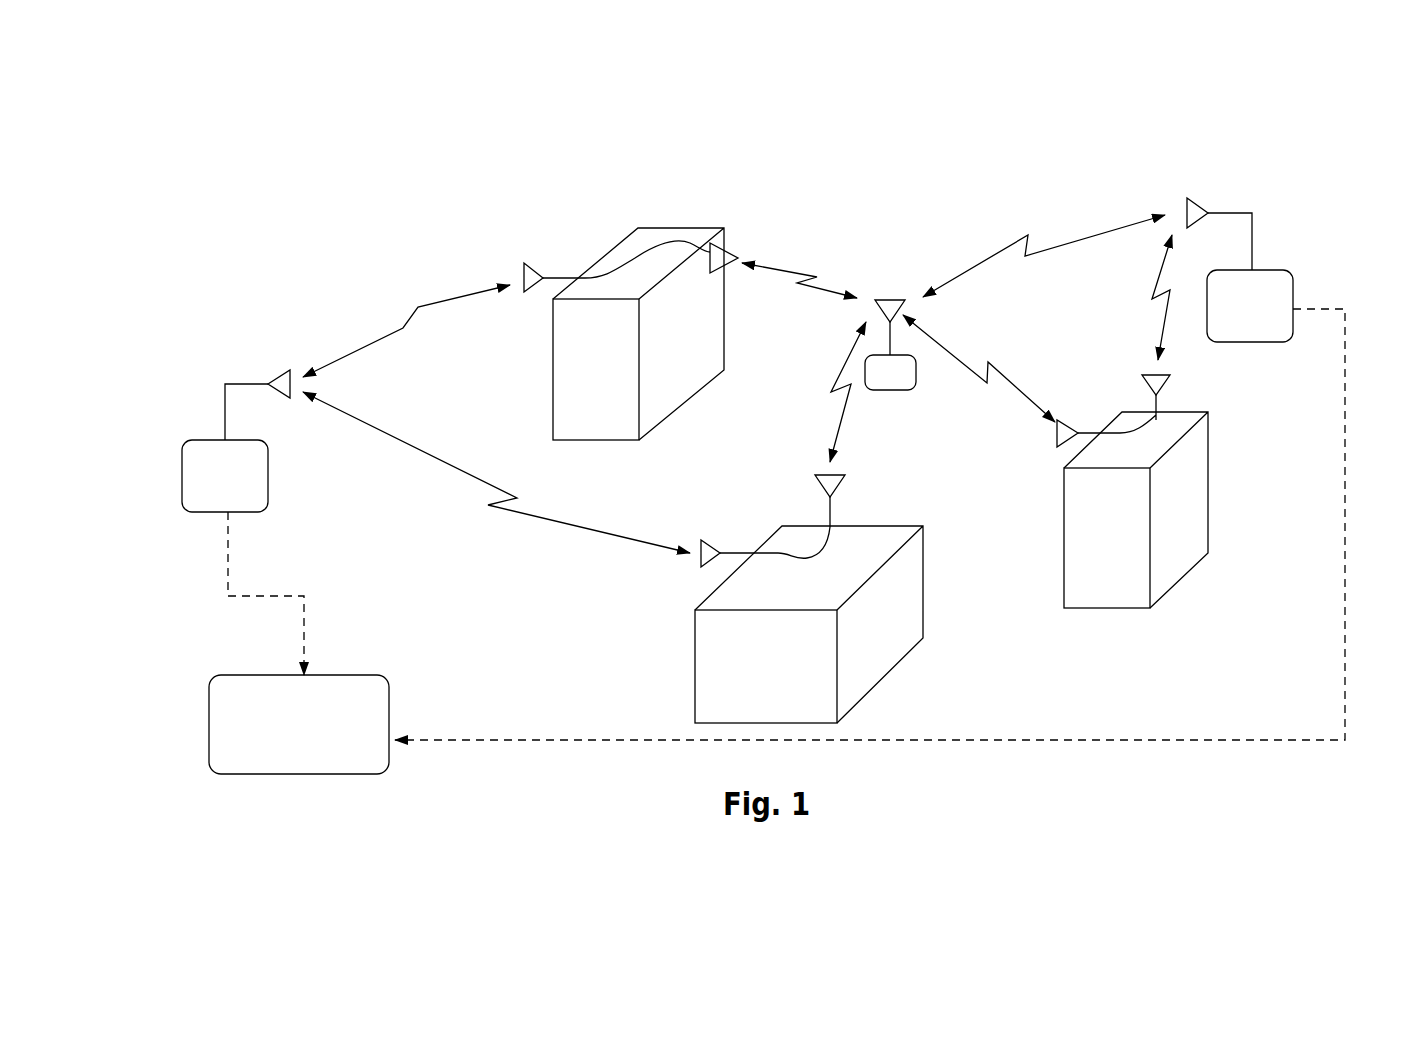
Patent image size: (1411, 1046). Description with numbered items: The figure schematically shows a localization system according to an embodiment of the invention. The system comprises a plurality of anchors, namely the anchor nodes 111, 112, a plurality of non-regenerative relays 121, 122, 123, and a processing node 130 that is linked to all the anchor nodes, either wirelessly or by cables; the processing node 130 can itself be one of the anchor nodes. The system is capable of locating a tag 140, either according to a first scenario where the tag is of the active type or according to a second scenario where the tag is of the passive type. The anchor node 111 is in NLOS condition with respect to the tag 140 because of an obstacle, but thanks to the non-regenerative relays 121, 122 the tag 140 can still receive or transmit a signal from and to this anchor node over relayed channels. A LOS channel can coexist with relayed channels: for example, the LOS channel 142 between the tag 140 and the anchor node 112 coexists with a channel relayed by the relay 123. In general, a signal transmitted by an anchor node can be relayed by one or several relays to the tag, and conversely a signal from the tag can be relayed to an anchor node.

The anchor node 111 is at (203, 432).
The anchor node 112 is at (1303, 273).
The non-regenerative relay 121 is at (623, 268).
The non-regenerative relay 122 is at (818, 553).
The non-regenerative relay 123 is at (1158, 422).
The processing node 130 is at (397, 702).
The tag 140 is at (916, 367).
The LOS channel 142 is at (1103, 232).